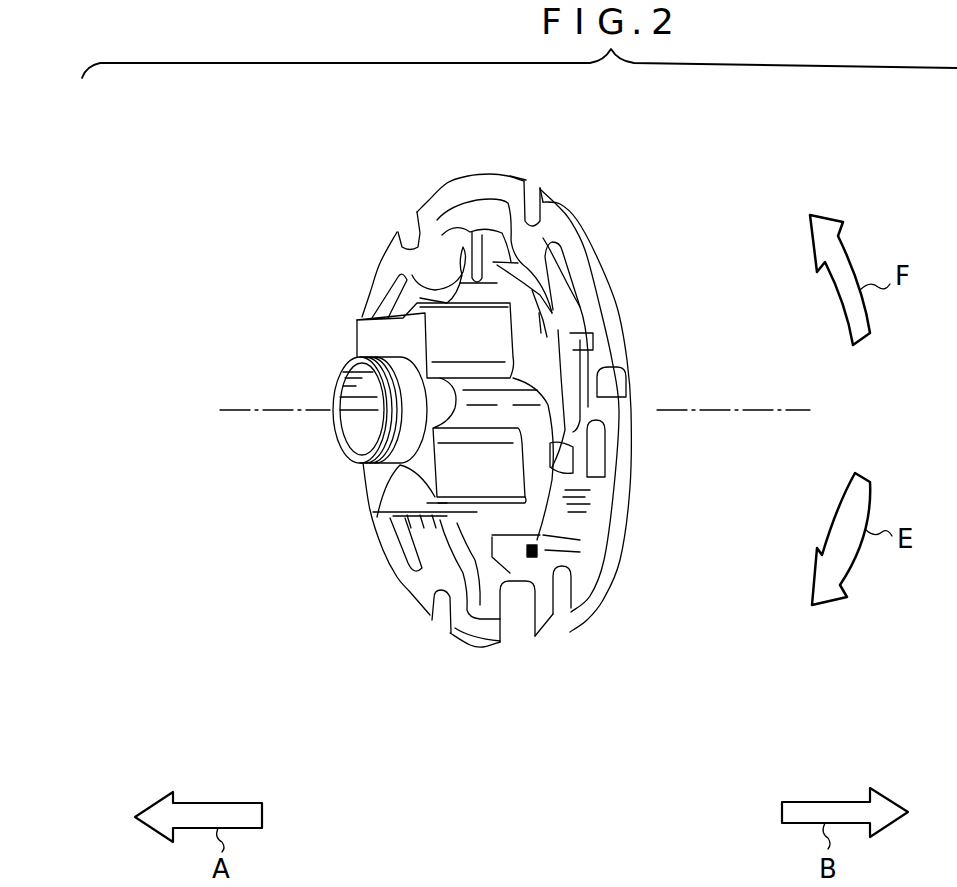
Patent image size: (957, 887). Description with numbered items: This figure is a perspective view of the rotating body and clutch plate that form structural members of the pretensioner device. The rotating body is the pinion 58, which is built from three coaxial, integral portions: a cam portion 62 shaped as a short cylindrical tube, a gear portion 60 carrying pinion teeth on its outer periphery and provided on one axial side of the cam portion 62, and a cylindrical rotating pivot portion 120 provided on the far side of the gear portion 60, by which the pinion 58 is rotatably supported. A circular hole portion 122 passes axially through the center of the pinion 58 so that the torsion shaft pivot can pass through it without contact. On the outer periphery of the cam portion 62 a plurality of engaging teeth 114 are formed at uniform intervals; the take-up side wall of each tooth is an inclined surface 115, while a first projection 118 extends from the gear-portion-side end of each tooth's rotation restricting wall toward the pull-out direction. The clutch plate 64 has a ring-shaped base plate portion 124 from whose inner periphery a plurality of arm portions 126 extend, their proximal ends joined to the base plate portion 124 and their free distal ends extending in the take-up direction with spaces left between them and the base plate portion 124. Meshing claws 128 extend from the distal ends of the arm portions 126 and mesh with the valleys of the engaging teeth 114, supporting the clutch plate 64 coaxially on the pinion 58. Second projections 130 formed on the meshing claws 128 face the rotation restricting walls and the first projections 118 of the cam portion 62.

The pinion 58 is at (348, 317).
The gear portion 60 is at (377, 487).
The cam portion 62 is at (428, 566).
The clutch plate 64 is at (458, 180).
The engaging teeth 114 is at (499, 205).
The inclined surface 115 is at (583, 413).
The first projection 118 is at (580, 327).
The rotating pivot portion 120 is at (335, 403).
The hole portion 122 is at (338, 433).
The base plate portion 124 is at (470, 633).
The arm portions 126 is at (560, 262).
The meshing claws 128 is at (535, 556).
The second projections 130 is at (593, 335).